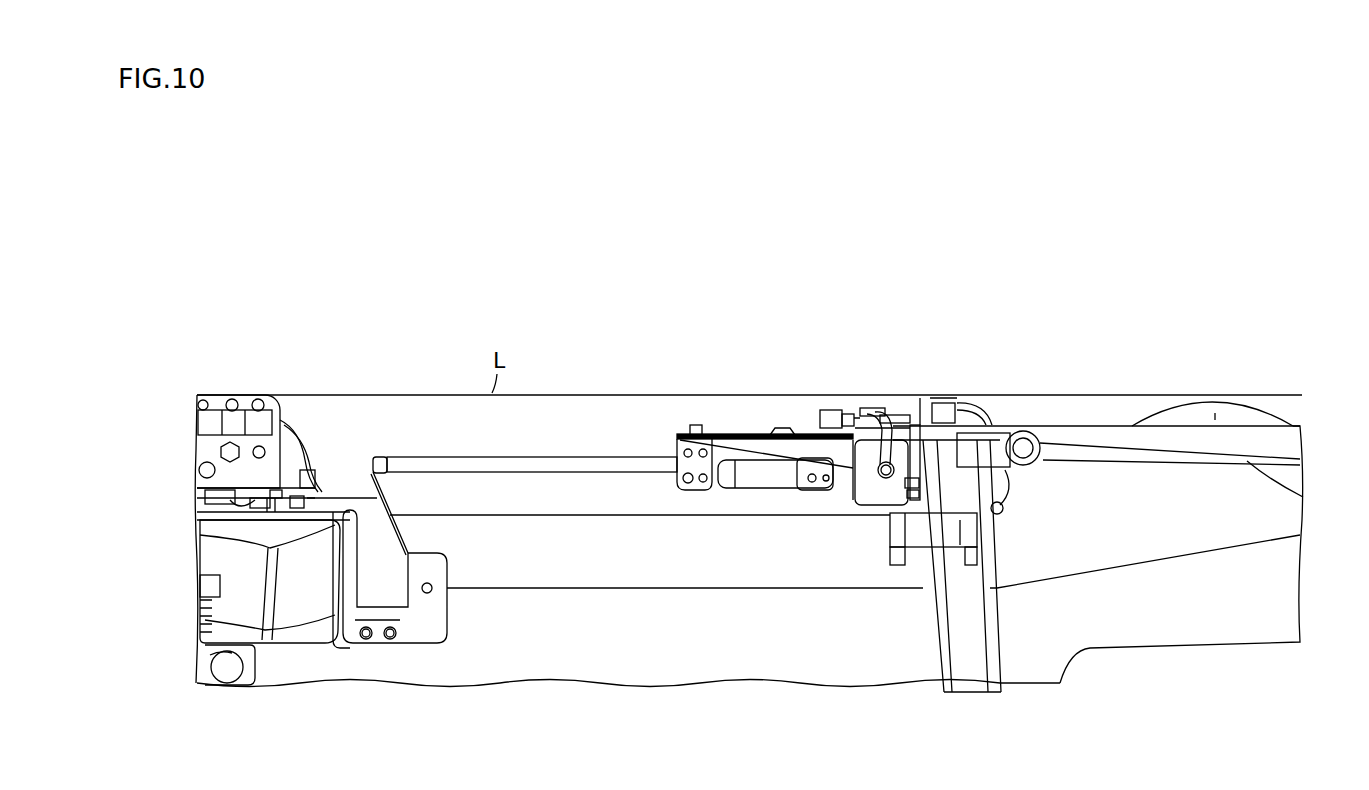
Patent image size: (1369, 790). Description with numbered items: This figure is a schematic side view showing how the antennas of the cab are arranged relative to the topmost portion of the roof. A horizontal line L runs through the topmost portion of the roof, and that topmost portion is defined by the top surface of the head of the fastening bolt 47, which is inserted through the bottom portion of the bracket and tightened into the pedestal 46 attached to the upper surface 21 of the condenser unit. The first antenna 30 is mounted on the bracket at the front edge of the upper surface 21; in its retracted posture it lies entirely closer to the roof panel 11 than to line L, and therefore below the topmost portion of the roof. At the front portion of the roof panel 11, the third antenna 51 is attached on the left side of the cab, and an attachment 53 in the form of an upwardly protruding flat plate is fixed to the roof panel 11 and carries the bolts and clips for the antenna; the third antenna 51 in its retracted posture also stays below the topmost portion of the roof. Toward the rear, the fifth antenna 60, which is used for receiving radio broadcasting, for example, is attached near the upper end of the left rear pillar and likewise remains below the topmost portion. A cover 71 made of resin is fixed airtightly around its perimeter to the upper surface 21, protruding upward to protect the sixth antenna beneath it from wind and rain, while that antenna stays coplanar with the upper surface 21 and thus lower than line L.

The roof panel 11 is at (584, 514).
The upper surface 21 is at (1092, 425).
The first antenna 30 is at (495, 456).
The pedestal 46 is at (938, 410).
The fastening bolt 47 is at (946, 400).
The third antenna 51 is at (210, 422).
The attachment 53 is at (212, 450).
The fifth antenna 60 is at (1303, 496).
The cover 71 is at (1233, 413).